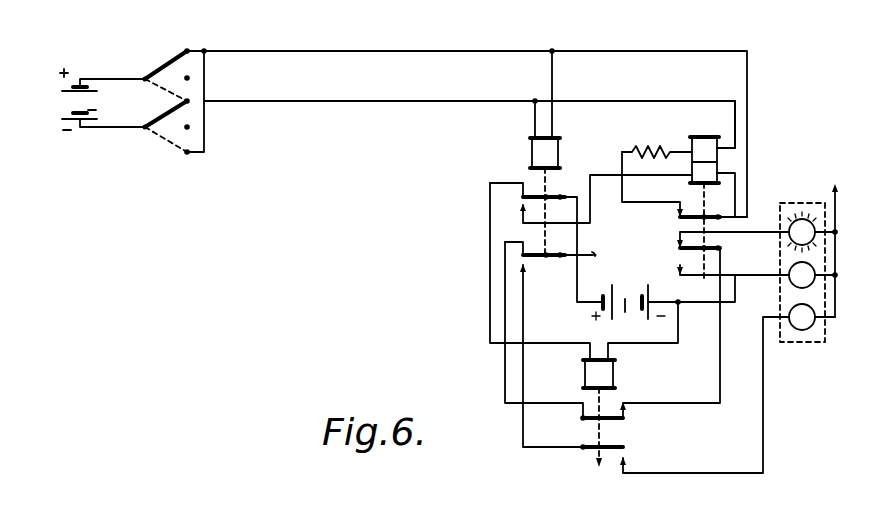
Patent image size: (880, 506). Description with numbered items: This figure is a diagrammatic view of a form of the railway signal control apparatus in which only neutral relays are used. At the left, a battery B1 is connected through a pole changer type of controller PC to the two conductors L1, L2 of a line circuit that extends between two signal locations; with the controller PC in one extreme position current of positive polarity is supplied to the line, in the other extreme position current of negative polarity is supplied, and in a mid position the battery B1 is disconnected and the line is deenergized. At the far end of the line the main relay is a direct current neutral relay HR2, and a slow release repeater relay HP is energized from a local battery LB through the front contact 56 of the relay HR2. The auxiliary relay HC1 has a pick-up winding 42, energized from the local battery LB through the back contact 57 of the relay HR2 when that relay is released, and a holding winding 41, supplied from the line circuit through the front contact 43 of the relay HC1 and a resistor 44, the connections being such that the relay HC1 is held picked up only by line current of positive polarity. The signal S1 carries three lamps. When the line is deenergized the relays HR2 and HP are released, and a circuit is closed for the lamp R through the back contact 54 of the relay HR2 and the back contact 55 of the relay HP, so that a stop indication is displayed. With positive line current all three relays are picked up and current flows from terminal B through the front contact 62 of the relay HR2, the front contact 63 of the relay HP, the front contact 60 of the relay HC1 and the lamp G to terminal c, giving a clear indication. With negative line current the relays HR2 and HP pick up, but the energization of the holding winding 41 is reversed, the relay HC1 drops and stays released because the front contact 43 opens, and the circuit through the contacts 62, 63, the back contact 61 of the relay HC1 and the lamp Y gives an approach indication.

The holding winding 41 is at (712, 144).
The pick-up winding 42 is at (712, 168).
The front contact 43 is at (679, 204).
The resistor 44 is at (652, 140).
The back contact 54 is at (527, 273).
The back contact 55 is at (626, 462).
The front contact 56 is at (523, 189).
The back contact 57 is at (593, 201).
The front contact 60 is at (680, 244).
The back contact 61 is at (680, 272).
The front contact 62 is at (525, 250).
The front contact 63 is at (626, 418).
The pole changer controller PC is at (175, 88).
The battery B1 is at (94, 99).
The line conductor L1 is at (338, 50).
The line conductor L2 is at (338, 100).
The main relay HR2 is at (532, 152).
The auxiliary relay HC1 is at (693, 194).
The slow release repeater relay HP is at (585, 377).
The local battery LB is at (663, 317).
The terminal B is at (602, 256).
The signal S1 is at (782, 198).
The lamp G is at (802, 232).
The lamp Y is at (802, 275).
The lamp R is at (802, 317).
The terminal c is at (832, 237).